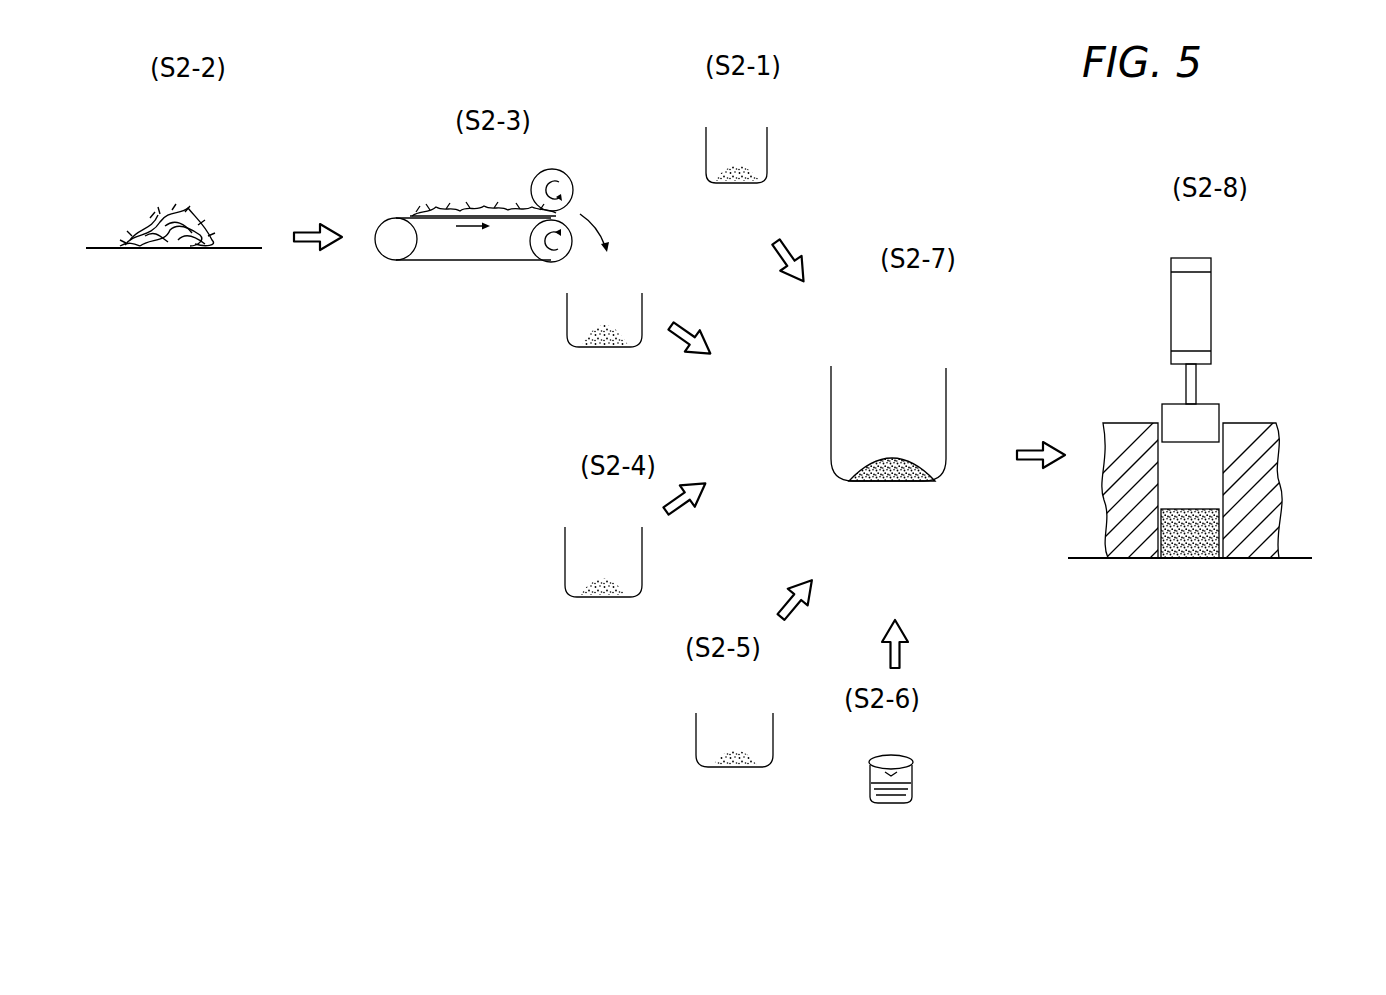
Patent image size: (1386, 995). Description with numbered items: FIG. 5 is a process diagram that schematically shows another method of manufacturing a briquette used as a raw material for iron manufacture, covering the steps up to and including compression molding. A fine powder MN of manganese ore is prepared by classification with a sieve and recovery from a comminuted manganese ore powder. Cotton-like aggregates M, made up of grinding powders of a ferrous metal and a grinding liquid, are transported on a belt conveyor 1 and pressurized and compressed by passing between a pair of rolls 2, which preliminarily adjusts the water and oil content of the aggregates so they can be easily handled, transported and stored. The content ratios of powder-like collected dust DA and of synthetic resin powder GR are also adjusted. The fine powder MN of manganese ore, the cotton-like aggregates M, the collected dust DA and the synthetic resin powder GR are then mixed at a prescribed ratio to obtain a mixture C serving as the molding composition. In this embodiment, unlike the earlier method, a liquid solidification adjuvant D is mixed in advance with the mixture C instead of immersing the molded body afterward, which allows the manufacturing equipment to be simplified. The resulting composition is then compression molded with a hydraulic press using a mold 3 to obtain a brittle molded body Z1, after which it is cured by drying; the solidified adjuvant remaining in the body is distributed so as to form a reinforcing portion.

The belt conveyor 1 is at (455, 261).
The rolls 2 is at (560, 190).
The mold 3 is at (1262, 509).
The brittle molded body Z1 is at (1183, 560).
The cotton-like aggregates M is at (180, 215).
The fine powder of manganese ore MN is at (735, 184).
The collected dust DA is at (603, 597).
The synthetic resin powder GR is at (735, 768).
The solidification adjuvant D is at (905, 800).
The mixture C is at (895, 385).